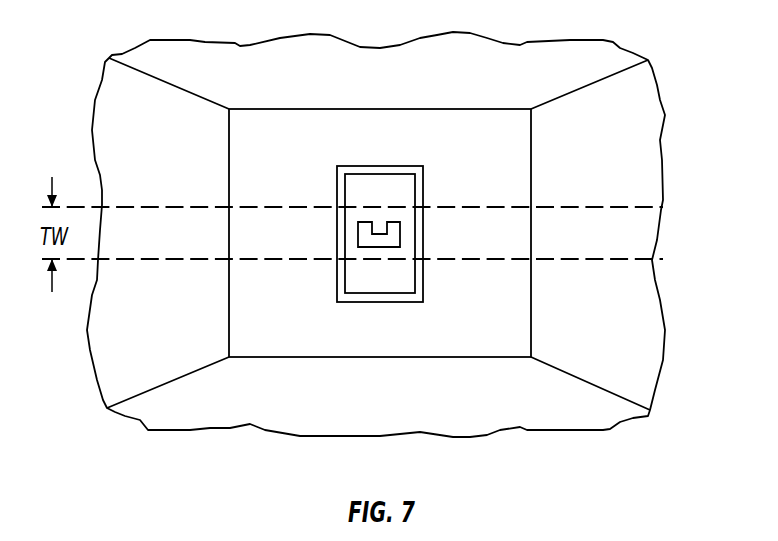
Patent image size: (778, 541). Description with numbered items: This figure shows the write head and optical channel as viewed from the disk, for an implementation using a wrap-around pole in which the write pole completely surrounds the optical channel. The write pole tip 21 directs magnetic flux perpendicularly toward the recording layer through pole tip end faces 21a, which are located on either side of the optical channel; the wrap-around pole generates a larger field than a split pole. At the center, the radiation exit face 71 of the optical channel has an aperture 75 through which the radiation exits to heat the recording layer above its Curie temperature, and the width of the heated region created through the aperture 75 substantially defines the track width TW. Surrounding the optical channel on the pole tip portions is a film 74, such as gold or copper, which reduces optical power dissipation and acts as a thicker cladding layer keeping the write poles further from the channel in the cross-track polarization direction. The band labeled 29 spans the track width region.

The write pole tip 21 is at (433, 52).
The pole tip end face 21a is at (240, 193).
The scribe line band 29 is at (667, 207).
The radiation exit face 71 is at (369, 283).
The film 74 is at (418, 197).
The aperture 75 is at (363, 218).